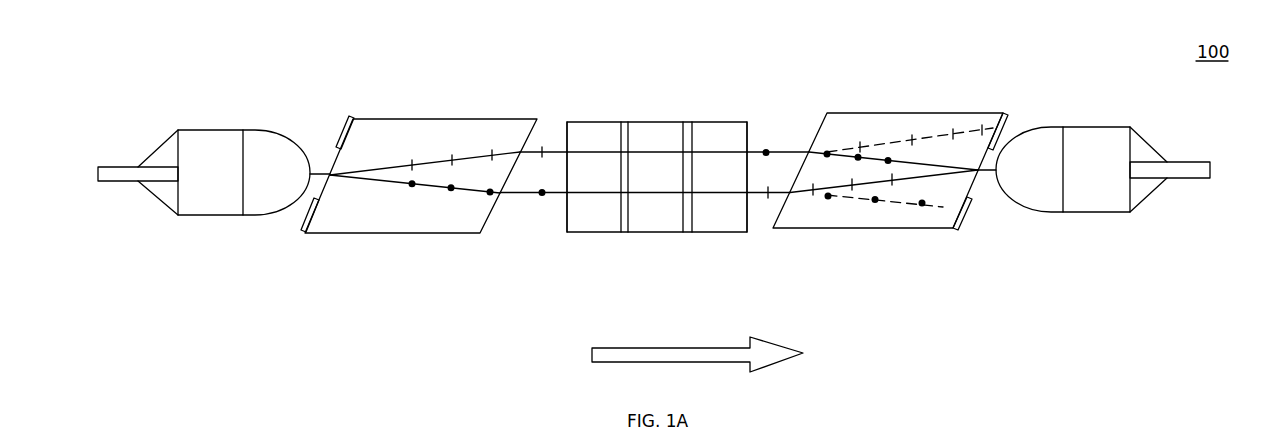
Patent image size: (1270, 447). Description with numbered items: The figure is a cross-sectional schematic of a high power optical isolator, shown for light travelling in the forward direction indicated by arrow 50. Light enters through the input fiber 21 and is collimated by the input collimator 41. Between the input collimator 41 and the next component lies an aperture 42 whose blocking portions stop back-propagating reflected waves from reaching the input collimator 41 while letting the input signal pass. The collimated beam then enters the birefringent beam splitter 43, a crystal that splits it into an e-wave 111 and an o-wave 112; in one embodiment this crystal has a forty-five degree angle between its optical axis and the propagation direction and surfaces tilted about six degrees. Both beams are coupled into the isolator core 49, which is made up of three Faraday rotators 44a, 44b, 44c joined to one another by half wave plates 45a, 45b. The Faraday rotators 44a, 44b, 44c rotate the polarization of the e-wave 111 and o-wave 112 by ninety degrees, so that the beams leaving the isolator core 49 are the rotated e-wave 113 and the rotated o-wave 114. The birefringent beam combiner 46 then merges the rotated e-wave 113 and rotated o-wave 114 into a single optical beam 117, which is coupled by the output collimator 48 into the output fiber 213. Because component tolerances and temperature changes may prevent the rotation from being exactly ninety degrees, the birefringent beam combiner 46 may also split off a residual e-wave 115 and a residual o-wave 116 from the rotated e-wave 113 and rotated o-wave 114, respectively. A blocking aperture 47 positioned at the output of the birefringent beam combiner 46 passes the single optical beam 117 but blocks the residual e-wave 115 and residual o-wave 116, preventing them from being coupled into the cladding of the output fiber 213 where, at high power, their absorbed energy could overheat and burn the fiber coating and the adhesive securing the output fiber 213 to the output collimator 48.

The input fiber 21 is at (122, 182).
The input collimator 41 is at (262, 138).
The aperture 42 is at (302, 232).
The birefringent beam splitter 43 is at (387, 233).
The Faraday rotator 44a is at (600, 222).
The Faraday rotator 44b is at (663, 222).
The Faraday rotator 44c is at (712, 222).
The half wave plate 45a is at (625, 122).
The half wave plate 45b is at (687, 122).
The birefringent beam combiner 46 is at (863, 227).
The blocking aperture 47 is at (957, 227).
The output collimator 48 is at (1048, 212).
The isolator core 49 is at (690, 85).
The arrow 50 is at (603, 350).
The e-wave 111 is at (553, 152).
The o-wave 112 is at (550, 193).
The rotated e-wave 113 is at (790, 150).
The rotated o-wave 114 is at (775, 193).
The residual e-wave 115 is at (978, 118).
The residual o-wave 116 is at (940, 207).
The single optical beam 117 is at (983, 172).
The output fiber 213 is at (1195, 178).